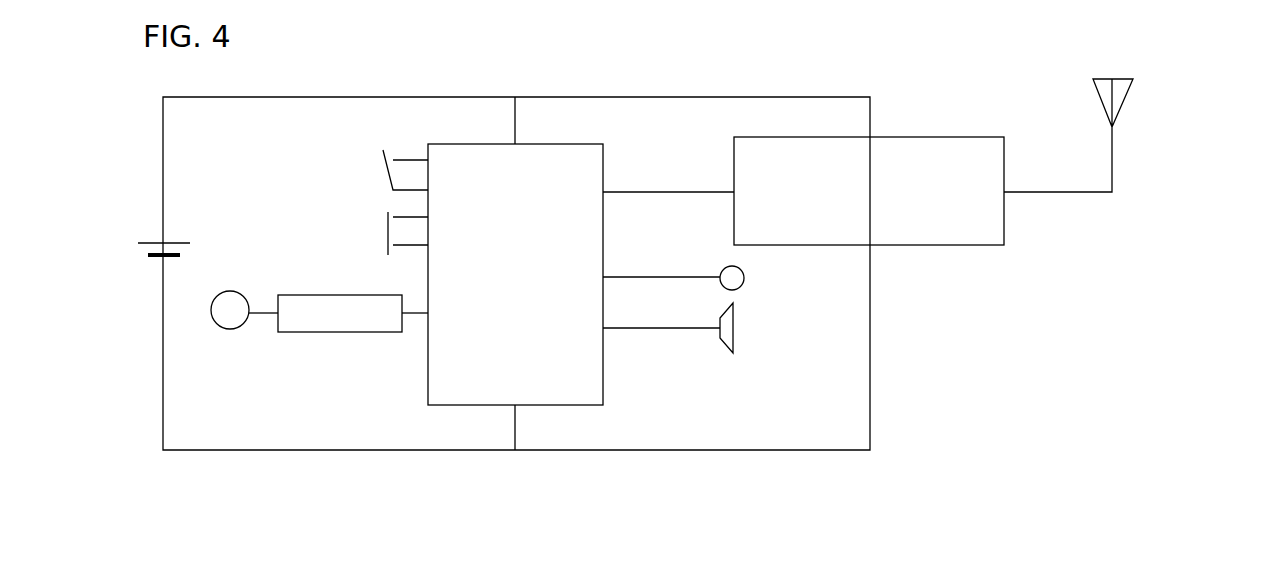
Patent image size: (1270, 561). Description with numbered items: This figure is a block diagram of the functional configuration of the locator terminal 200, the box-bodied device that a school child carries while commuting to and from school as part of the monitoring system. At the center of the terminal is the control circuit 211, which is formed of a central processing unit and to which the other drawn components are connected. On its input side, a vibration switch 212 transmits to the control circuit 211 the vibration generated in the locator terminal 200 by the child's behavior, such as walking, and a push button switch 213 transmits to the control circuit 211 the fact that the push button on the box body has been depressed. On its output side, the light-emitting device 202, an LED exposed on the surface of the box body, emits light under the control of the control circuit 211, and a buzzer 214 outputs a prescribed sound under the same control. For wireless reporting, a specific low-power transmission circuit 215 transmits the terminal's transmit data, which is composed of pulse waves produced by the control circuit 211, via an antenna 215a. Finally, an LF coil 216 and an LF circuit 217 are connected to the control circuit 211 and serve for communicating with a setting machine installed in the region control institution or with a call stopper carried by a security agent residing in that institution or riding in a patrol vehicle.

The locator terminal 200 is at (850, 80).
The control circuit 211 is at (601, 160).
The vibration switch 212 is at (380, 166).
The push button switch 213 is at (380, 229).
The buzzer 214 is at (735, 333).
The specific low-power transmission circuit 215 is at (937, 137).
The antenna 215a is at (1123, 90).
The LF coil 216 is at (226, 302).
The LF circuit 217 is at (330, 333).
The light-emitting device 202 is at (742, 281).